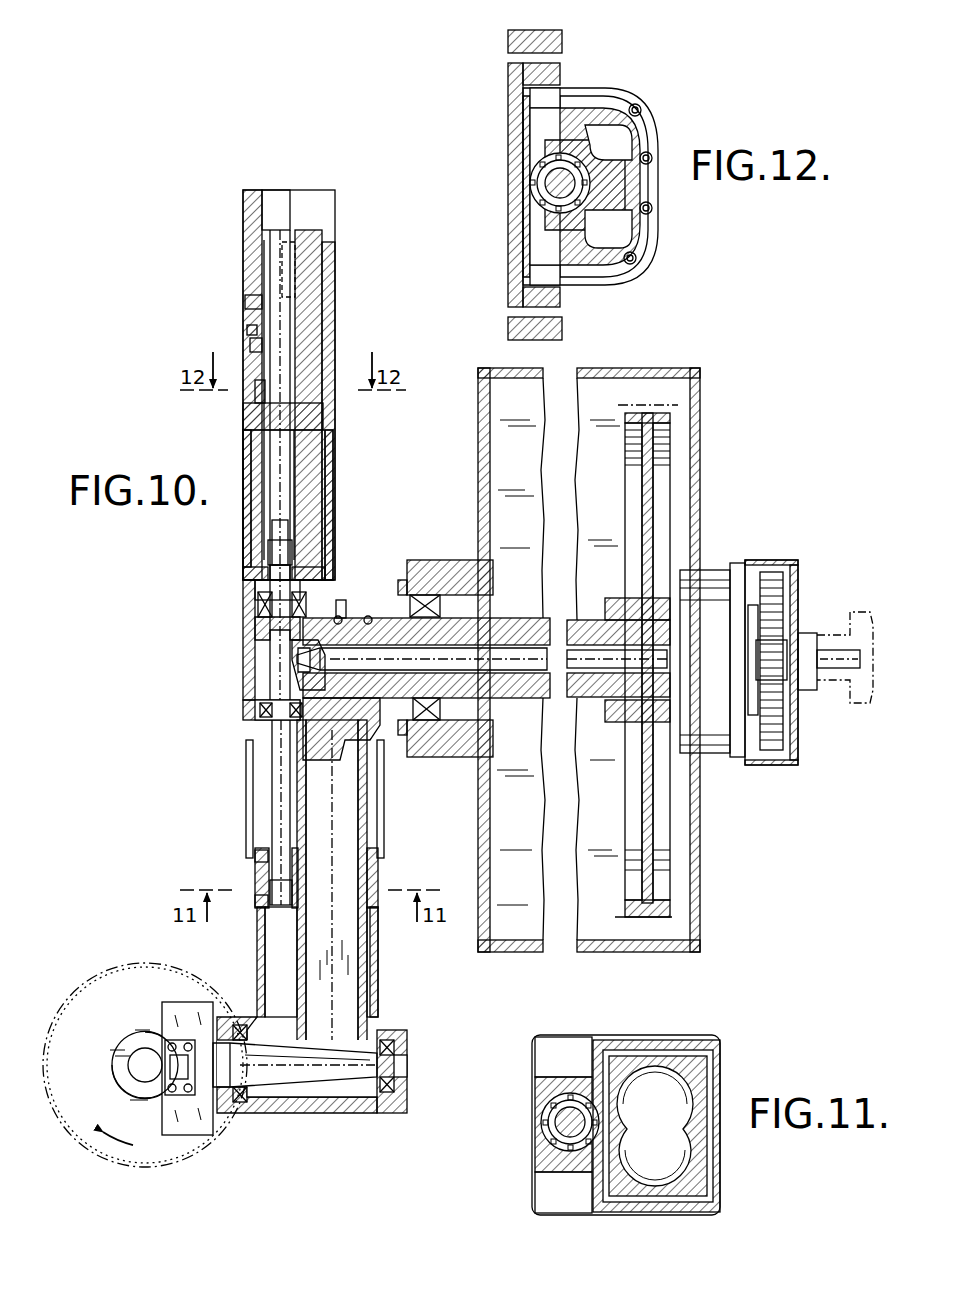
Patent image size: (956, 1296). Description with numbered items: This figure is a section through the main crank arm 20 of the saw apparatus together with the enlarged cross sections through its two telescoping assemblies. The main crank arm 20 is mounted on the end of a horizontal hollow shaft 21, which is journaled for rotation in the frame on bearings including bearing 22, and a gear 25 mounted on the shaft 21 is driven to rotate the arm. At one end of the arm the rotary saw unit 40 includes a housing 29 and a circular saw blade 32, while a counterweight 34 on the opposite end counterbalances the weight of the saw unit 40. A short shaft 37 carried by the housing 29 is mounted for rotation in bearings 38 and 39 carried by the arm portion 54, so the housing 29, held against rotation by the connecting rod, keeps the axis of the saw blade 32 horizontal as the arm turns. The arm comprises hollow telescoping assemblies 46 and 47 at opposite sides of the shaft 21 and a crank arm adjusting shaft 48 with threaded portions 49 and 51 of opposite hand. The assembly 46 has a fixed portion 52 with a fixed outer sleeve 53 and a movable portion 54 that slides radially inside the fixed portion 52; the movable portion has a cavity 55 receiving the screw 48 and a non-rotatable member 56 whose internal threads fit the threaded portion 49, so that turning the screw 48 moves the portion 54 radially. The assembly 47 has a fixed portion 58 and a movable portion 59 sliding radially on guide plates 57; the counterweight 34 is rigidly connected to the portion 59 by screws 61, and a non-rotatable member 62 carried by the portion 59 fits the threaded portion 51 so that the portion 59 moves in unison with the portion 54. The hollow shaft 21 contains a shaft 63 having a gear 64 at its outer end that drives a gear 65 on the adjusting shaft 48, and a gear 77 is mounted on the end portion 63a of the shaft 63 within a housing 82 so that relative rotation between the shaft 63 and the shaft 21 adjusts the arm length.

In FIG. 10, the main crank arm 20 is at (337, 529).
In FIG. 10, the hollow shaft 21 is at (514, 632).
In FIG. 10, the bearing 22 is at (441, 605).
In FIG. 10, the gear 25 is at (633, 479).
In FIG. 10, the housing 29 is at (165, 1010).
In FIG. 10, the circular saw blade 32 is at (82, 988).
In FIG. 10, the counterweight 34 is at (243, 224).
In FIG. 10, the short shaft 37 is at (325, 1052).
In FIG. 10, the bearing 38 is at (244, 1106).
In FIG. 10, the bearing 39 is at (390, 1113).
In FIG. 10, the rotary saw unit 40 is at (110, 966).
In FIG. 10, the hollow telescoping assembly 46 is at (255, 955).
In FIG. 10, the hollow telescoping assembly 47 is at (240, 448).
In FIG. 10, the crank arm adjusting shaft 48 is at (284, 532).
In FIG. 10, the threaded portion 49 is at (274, 779).
In FIG. 11, the threaded portion 49 is at (568, 1115).
In FIG. 10, the threaded portion 51 is at (282, 476).
In FIG. 12, the threaded portion 51 is at (552, 190).
In FIG. 10, the fixed portion 52 is at (306, 779).
In FIG. 11, the fixed portion 52 is at (636, 1082).
In FIG. 10, the fixed outer sleeve 53 is at (247, 816).
In FIG. 11, the fixed outer sleeve 53 is at (533, 1193).
In FIG. 10, the movable portion 54 is at (378, 974).
In FIG. 10, the cavity 55 is at (258, 976).
In FIG. 11, the non-rotatable member 56 is at (545, 1117).
In FIG. 12, the guide plates 57 is at (606, 165).
In FIG. 10, the fixed portion 58 is at (333, 489).
In FIG. 12, the fixed portion 58 is at (635, 240).
In FIG. 10, the movable portion 59 is at (305, 312).
In FIG. 12, the movable portion 59 is at (622, 190).
In FIG. 10, the screws 61 is at (246, 300).
In FIG. 10, the non-rotatable member 62 is at (300, 408).
In FIG. 12, the non-rotatable member 62 is at (540, 165).
In FIG. 10, the shaft 63 is at (520, 660).
In FIG. 10, the end portion of shaft 63a is at (838, 665).
In FIG. 10, the gear 64 is at (300, 677).
In FIG. 10, the gear 65 is at (258, 630).
In FIG. 10, the gear 77 is at (775, 607).
In FIG. 10, the housing 82 is at (784, 560).